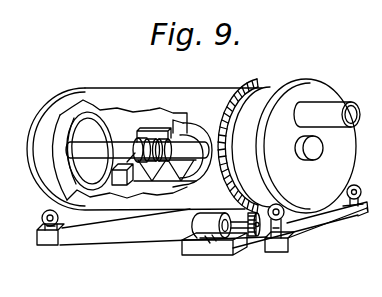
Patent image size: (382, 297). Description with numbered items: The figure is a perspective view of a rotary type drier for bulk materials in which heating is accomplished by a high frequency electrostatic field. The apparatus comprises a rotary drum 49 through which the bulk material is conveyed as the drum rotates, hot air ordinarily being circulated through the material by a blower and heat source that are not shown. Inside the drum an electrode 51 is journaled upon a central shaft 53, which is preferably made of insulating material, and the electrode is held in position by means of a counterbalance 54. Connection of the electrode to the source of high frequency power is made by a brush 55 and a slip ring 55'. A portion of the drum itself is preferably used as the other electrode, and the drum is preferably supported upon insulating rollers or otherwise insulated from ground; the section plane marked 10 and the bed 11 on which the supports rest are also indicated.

The section line / pipe 10 is at (262, 57).
The bed 11 is at (221, 225).
The rotary drum 49 is at (270, 67).
The electrode 51 is at (156, 182).
The central shaft 53 is at (184, 146).
The counterbalance 54 is at (127, 182).
The brush 55 is at (152, 101).
The slip ring 55' is at (169, 112).